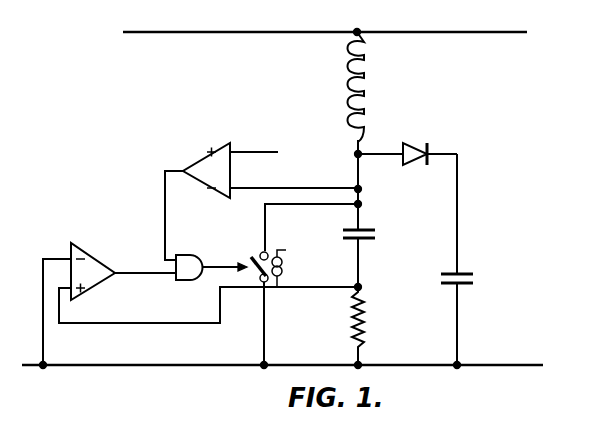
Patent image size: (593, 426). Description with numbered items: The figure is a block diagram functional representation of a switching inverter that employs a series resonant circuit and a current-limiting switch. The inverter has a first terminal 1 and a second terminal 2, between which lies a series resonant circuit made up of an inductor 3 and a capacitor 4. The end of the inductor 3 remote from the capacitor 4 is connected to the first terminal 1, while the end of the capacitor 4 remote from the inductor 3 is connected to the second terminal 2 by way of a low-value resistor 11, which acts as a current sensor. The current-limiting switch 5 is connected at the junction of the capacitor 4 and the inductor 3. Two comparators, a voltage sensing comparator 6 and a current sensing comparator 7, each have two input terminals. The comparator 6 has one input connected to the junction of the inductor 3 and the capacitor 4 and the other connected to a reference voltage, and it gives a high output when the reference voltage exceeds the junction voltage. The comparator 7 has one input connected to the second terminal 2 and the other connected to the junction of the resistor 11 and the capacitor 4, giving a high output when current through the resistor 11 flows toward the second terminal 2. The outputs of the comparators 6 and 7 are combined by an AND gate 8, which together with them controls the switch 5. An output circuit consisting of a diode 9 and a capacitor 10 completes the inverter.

The first terminal 1 is at (430, 31).
The second terminal 2 is at (500, 364).
The inductor 3 is at (367, 104).
The capacitor 4 is at (375, 230).
The current-limiting switch 5 is at (283, 268).
The voltage sensing comparator 6 is at (205, 150).
The current sensing comparator 7 is at (103, 263).
The AND gate 8 is at (198, 255).
The diode 9 is at (418, 146).
The capacitor 10 is at (470, 272).
The low-value resistor 11 is at (366, 311).